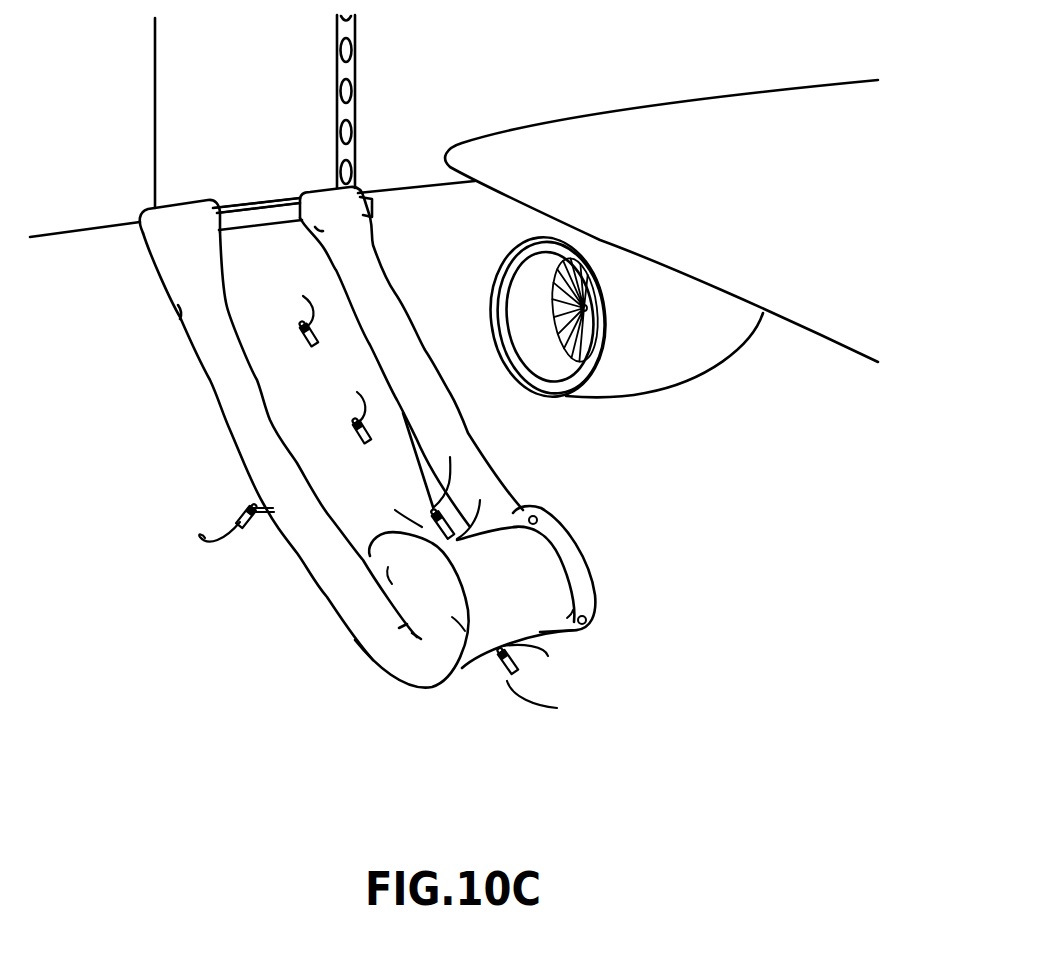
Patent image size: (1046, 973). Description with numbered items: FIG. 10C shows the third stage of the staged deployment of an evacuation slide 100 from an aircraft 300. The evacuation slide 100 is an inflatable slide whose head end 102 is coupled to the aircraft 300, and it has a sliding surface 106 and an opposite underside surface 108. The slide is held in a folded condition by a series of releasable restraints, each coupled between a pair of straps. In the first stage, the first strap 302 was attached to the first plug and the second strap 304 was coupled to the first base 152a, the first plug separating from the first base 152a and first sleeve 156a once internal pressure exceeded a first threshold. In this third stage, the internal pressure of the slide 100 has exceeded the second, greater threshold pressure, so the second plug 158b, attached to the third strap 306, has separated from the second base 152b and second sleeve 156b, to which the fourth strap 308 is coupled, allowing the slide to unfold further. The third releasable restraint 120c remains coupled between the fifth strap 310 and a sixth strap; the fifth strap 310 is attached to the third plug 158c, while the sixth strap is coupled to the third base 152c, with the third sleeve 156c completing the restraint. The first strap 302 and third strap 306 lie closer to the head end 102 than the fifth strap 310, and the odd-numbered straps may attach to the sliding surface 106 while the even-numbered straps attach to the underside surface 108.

The aircraft 300 is at (72, 106).
The evacuation slide 100 is at (132, 196).
The head end 102 is at (240, 231).
The sliding surface 106 is at (241, 273).
The underside surface 108 is at (490, 616).
The first strap 302 is at (303, 300).
The third strap 306 is at (353, 395).
The fifth strap 310 is at (447, 469).
The second strap 304 is at (273, 513).
The fourth strap 308 is at (534, 664).
The first base 152a is at (315, 350).
The second base 152b is at (500, 672).
The third base 152c is at (458, 553).
The first sleeve 156a is at (198, 532).
The second sleeve 156b is at (554, 702).
The third sleeve 156c is at (482, 508).
The second plug 158b is at (369, 448).
The third plug 158c is at (437, 531).
The third releasable restraint 120c is at (434, 550).